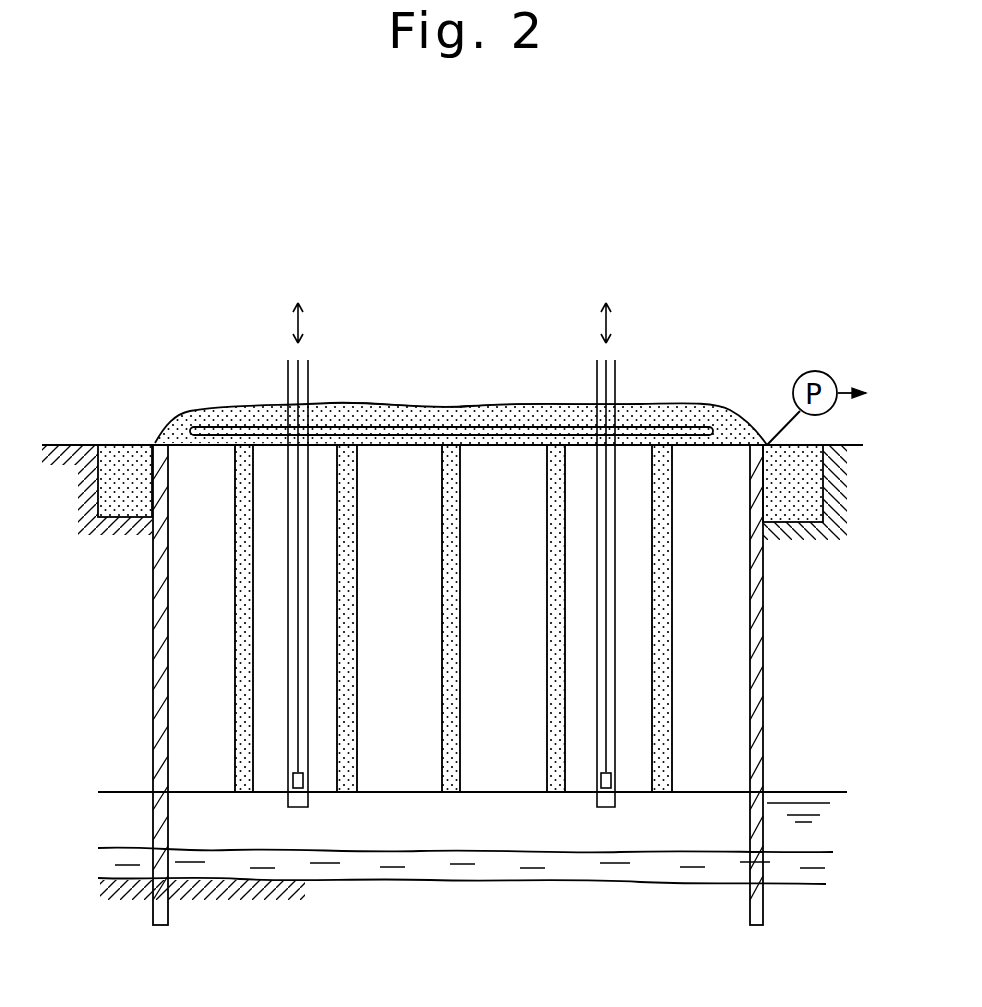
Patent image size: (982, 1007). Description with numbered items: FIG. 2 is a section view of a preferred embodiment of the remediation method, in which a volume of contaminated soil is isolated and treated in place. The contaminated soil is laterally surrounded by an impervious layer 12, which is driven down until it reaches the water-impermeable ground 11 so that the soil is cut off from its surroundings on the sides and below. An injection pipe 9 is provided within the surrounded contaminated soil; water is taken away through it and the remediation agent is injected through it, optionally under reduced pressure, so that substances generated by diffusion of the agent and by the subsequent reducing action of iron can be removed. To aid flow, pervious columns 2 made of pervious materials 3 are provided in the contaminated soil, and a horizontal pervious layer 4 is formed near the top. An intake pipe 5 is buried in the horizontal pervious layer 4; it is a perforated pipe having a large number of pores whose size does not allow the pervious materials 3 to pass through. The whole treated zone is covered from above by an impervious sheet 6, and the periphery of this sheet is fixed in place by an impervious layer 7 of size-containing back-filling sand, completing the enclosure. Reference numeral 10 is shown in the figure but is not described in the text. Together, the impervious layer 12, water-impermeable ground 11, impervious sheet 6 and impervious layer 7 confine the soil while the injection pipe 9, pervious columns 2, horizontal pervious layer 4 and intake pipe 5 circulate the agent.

The pervious column 2 is at (226, 548).
The pervious materials 3 is at (235, 733).
The horizontal pervious layer 4 is at (530, 415).
The intake pipe 5 is at (418, 425).
The impervious sheet 6 is at (340, 403).
The impervious layer 7 is at (122, 455).
The injection pipe 9 is at (306, 780).
The water level 10 is at (813, 792).
The water-impermeable ground 11 is at (465, 894).
The impervious layer 12 is at (155, 905).